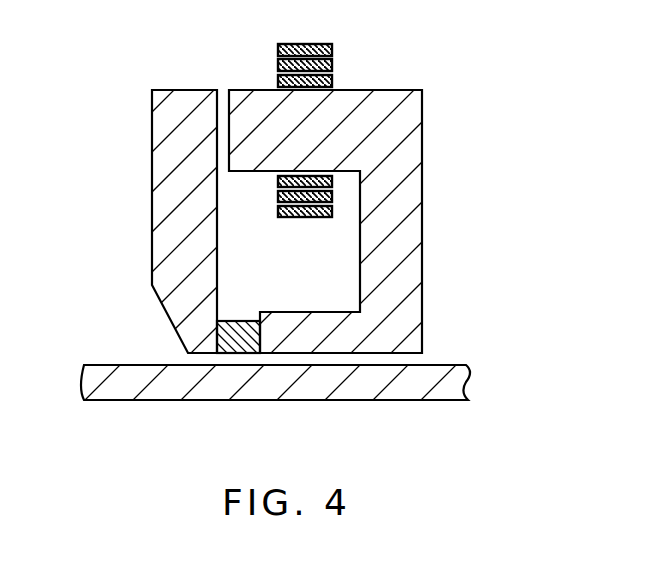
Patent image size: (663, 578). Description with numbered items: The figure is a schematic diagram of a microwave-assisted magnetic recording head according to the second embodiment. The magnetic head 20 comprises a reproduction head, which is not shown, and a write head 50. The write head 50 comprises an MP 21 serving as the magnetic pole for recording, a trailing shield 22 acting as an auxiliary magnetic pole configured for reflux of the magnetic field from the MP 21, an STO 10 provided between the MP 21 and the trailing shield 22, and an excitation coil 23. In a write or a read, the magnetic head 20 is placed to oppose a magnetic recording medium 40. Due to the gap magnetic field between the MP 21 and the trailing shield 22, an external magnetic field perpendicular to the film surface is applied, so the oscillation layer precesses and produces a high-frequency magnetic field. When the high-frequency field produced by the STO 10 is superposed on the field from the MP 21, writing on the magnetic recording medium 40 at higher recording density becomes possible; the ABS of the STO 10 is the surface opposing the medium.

The STO 10 is at (237, 320).
The magnetic head 20 is at (470, 83).
The MP 21 is at (187, 320).
The trailing shield 22 is at (277, 316).
The excitation coil 23 is at (278, 212).
The magnetic recording medium 40 is at (417, 393).
The write head 50 is at (93, 195).